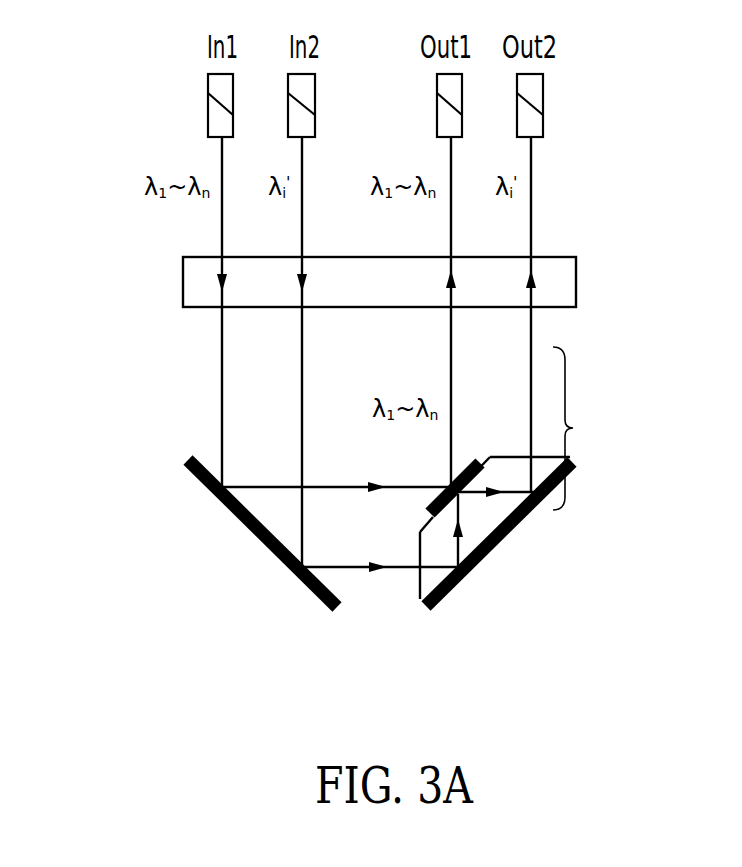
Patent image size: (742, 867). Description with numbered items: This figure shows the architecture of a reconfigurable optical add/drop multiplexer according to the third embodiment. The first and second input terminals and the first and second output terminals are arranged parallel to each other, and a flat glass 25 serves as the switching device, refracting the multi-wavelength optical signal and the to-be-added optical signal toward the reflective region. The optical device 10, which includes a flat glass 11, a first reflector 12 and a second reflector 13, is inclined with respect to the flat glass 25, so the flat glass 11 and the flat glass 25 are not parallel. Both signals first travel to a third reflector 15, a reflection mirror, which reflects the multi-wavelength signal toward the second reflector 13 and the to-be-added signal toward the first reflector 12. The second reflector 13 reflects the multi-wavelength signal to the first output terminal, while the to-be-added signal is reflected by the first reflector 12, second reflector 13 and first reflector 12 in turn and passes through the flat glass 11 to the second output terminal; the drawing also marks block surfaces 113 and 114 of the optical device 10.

The optical device 10 is at (630, 428).
The flat glass 11 is at (549, 449).
The first reflector 12 is at (530, 512).
The second reflector 13 is at (471, 460).
The third reflector 15 is at (243, 525).
The flat glass 25 is at (183, 281).
The input block surface 113 is at (419, 556).
The output block surface 114 is at (510, 456).